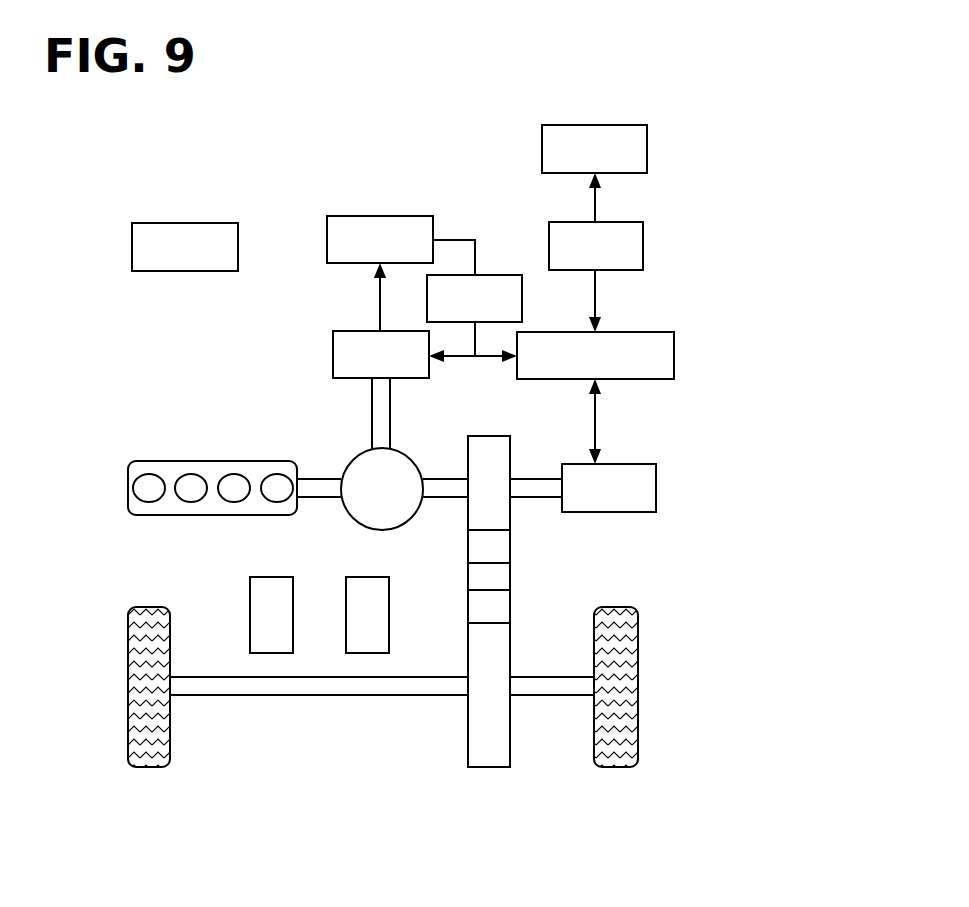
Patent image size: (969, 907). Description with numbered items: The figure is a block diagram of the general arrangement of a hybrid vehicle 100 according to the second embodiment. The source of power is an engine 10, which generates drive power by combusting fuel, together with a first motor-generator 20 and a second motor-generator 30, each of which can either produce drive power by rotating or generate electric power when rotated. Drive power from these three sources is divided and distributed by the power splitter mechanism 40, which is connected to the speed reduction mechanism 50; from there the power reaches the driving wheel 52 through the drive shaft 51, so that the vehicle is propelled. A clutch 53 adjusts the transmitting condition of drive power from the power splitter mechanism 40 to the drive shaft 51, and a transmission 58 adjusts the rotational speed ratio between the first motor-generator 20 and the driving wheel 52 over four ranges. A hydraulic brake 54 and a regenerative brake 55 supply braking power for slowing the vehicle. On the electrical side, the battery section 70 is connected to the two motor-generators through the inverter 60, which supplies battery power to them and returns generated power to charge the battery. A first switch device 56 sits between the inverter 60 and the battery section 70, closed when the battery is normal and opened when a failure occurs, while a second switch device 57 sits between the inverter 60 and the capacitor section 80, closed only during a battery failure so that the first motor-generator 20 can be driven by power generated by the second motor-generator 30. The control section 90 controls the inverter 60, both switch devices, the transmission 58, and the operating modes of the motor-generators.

The hybrid vehicle 100 is at (734, 116).
The control section 90 is at (162, 223).
The capacitor section 80 is at (360, 216).
The second switch device 57 is at (495, 273).
The second motor-generator 30 is at (333, 355).
The battery section 70 is at (648, 150).
The first switch device 56 is at (644, 242).
The inverter 60 is at (650, 332).
The first motor-generator 20 is at (656, 477).
The engine 10 is at (142, 462).
The power splitter mechanism 40 is at (348, 462).
The speed reduction mechanism 50 is at (468, 458).
The clutch 53 is at (468, 597).
The transmission 58 is at (510, 553).
The hydraulic brake 54 is at (250, 596).
The regenerative brake 55 is at (346, 596).
The drive shaft 51 is at (255, 677).
The driving wheel 52 is at (128, 638).